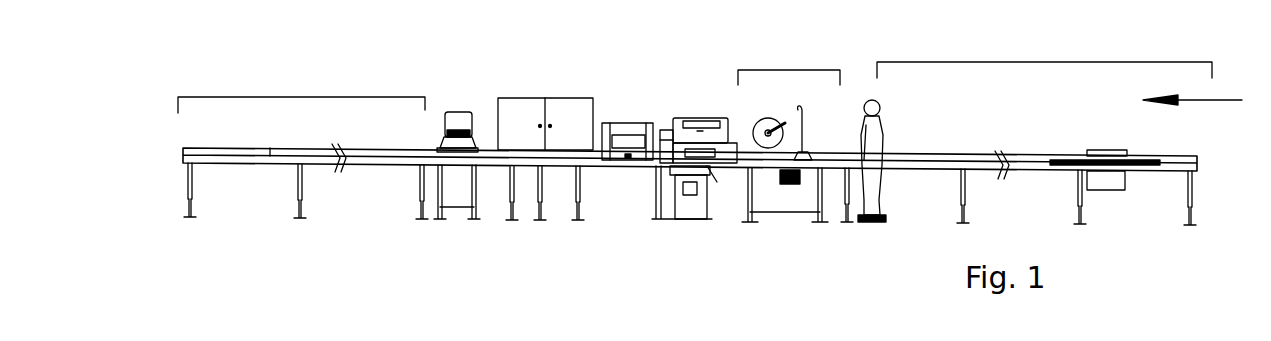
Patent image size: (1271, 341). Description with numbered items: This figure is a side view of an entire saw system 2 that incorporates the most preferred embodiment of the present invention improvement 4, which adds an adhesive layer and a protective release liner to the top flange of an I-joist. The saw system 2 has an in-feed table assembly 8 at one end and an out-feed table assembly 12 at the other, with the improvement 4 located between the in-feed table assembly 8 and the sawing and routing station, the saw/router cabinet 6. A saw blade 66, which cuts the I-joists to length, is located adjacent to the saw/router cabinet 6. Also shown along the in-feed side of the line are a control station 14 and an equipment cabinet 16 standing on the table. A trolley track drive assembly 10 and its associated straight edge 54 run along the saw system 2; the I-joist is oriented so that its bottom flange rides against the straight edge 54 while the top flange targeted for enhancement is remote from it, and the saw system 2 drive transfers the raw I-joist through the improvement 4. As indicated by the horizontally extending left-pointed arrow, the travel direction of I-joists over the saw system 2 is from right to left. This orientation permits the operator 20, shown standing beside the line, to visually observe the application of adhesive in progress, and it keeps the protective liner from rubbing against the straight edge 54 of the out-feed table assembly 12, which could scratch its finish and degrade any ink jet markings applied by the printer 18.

The saw system 2 is at (399, 40).
The present invention improvement 4 is at (790, 61).
The saw/router cabinet 6 is at (699, 110).
The in-feed table assembly 8 is at (1068, 53).
The trolley track drive assembly 10 is at (1107, 154).
The out-feed table assembly 12 is at (303, 89).
The computer 14 is at (448, 112).
The control cabinet 16 is at (553, 108).
The printer 18 is at (627, 123).
The operator 20 is at (877, 195).
The straight edge 54 is at (196, 150).
The saw blade 66 is at (665, 130).